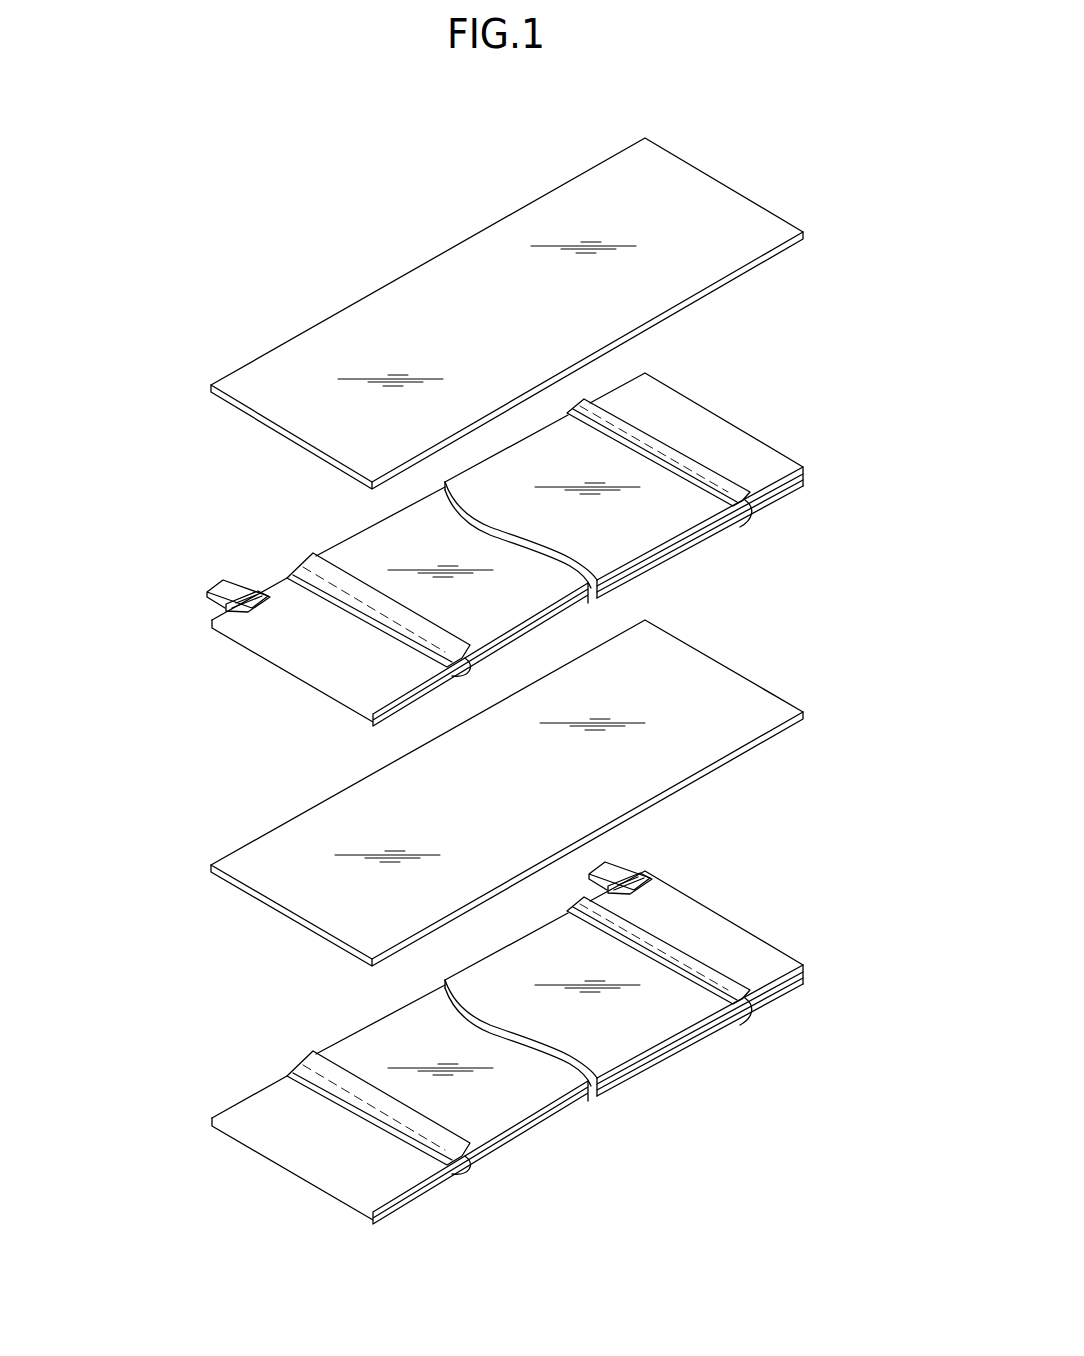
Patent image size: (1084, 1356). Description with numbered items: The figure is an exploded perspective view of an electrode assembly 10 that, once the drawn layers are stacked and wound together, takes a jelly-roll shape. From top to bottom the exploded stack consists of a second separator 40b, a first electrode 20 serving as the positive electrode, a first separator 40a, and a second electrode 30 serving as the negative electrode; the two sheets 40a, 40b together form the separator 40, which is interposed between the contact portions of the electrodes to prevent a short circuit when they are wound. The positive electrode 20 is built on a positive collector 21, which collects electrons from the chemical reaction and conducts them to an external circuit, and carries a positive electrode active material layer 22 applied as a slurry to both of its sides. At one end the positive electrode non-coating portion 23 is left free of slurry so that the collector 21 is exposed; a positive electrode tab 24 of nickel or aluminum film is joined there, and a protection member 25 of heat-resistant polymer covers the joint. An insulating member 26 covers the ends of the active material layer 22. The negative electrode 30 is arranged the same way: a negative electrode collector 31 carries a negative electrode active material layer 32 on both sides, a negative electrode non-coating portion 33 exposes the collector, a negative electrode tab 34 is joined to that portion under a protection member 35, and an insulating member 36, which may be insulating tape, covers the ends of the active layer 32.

The electrode assembly 10 is at (303, 186).
The first electrode 20 is at (708, 387).
The positive collector 21 is at (350, 679).
The positive electrode active material layer 22 is at (370, 540).
The positive electrode non-coating portion 23 is at (302, 660).
The positive electrode tab 24 is at (227, 582).
The protection member 25 is at (217, 613).
The insulating member 26 is at (308, 560).
The second electrode 30 is at (256, 1184).
The negative electrode collector 31 is at (735, 931).
The negative electrode active material layer 32 is at (640, 1040).
The negative electrode non-coating portion 33 is at (757, 973).
The negative electrode tab 34 is at (610, 868).
The protection member 35 is at (643, 873).
The insulating member 36 is at (464, 1178).
The separator 40 is at (840, 107).
The first separator 40a is at (723, 682).
The second separator 40b is at (723, 205).